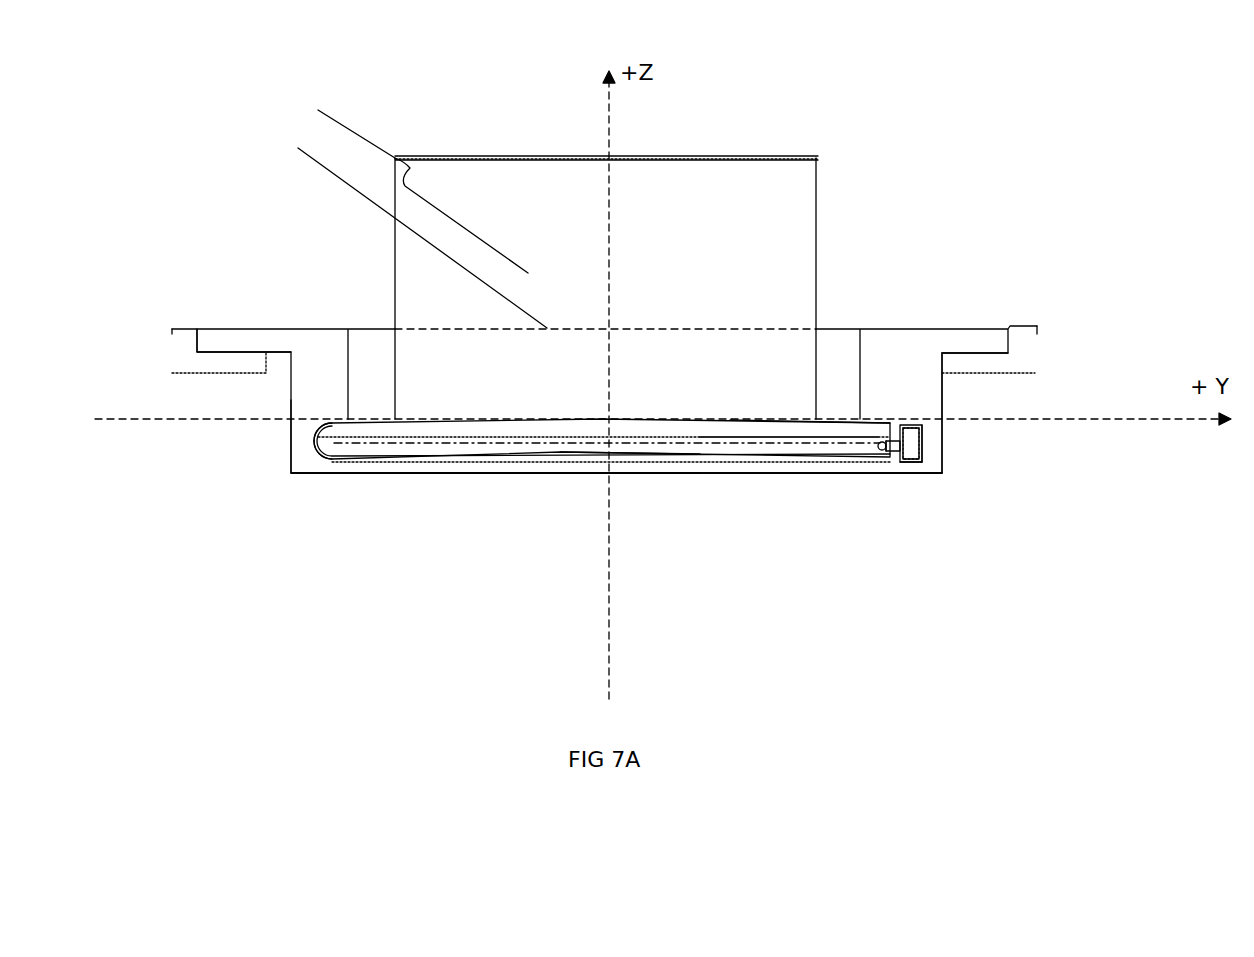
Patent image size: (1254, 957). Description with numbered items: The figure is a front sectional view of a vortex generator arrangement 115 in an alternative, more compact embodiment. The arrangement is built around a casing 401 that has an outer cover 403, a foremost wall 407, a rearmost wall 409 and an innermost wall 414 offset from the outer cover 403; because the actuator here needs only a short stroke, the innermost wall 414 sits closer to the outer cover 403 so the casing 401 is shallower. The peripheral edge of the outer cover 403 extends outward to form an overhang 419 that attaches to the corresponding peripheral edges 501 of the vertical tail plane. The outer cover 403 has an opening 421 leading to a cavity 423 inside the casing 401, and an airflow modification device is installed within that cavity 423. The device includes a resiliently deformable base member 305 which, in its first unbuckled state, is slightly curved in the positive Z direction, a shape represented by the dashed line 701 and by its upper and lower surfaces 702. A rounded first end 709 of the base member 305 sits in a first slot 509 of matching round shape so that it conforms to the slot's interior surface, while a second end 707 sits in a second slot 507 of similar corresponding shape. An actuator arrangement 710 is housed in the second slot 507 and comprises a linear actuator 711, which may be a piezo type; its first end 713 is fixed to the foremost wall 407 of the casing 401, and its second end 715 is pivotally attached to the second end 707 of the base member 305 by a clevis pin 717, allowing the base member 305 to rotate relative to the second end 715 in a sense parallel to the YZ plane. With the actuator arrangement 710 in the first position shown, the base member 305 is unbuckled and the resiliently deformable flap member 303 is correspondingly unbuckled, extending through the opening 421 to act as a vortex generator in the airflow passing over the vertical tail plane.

The vortex generator arrangement 115 is at (725, 140).
The resiliently deformable flap member 303 is at (396, 180).
The opening 421 is at (393, 233).
The peripheral edges 501 is at (180, 347).
The overhang 419 is at (232, 342).
The outer cover 403 is at (307, 348).
The rearmost wall 409 is at (302, 401).
The first slot 509 is at (315, 440).
The first end 709 is at (323, 448).
The dashed line 701 is at (432, 440).
The innermost wall 414 is at (507, 468).
The cavity 423 is at (625, 455).
The resiliently deformable base member 305 is at (703, 447).
The upper and lower surfaces 702 is at (732, 420).
The second end 707 is at (880, 450).
The foremost wall 407 is at (910, 398).
The second slot 507 is at (903, 425).
The linear actuator 711 is at (912, 438).
The first end 713 is at (923, 450).
The actuator arrangement 710 is at (903, 462).
The second end 715 is at (892, 452).
The clevis pin 717 is at (882, 452).
The casing 401 is at (661, 559).